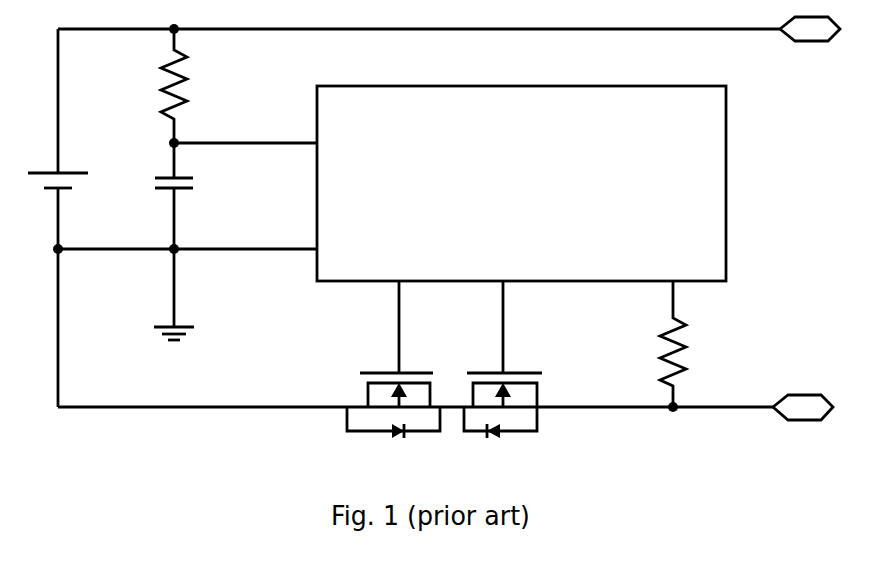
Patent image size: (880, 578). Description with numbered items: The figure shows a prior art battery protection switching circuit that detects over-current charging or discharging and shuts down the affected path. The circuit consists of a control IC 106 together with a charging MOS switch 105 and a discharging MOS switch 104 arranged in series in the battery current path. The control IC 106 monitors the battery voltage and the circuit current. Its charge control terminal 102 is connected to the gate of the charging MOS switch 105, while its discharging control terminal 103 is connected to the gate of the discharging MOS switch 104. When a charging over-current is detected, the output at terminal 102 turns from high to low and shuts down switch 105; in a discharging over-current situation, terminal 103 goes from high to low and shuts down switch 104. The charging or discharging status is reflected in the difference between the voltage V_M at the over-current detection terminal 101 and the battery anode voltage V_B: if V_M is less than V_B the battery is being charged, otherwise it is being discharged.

The over-current detection terminal 101 is at (691, 344).
The charge control terminal 102 is at (527, 327).
The discharging control terminal 103 is at (425, 327).
The discharging MOS switch 104 is at (374, 403).
The charging MOS switch 105 is at (527, 403).
The control IC 106 is at (521, 183).